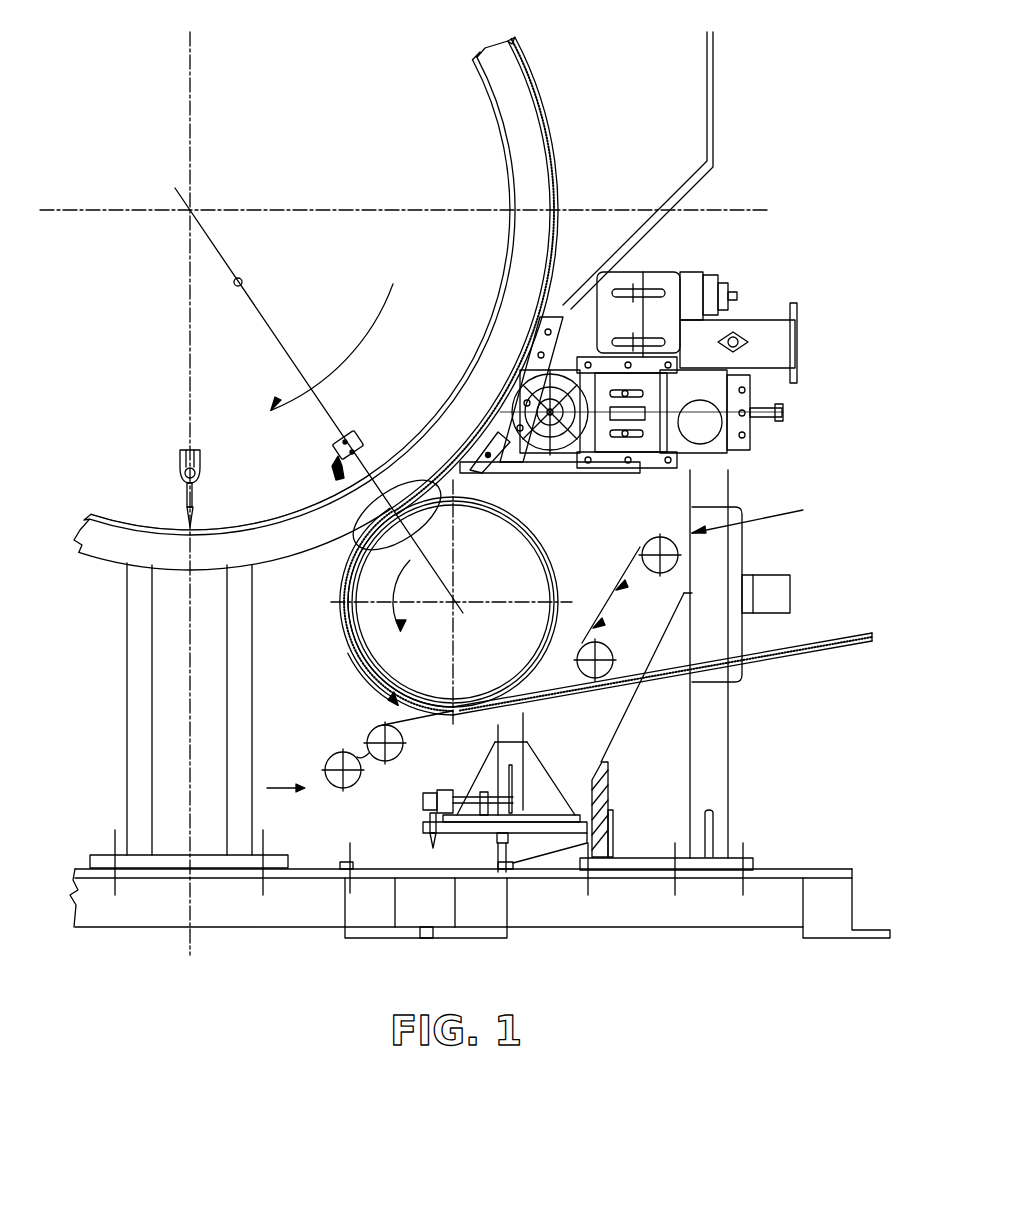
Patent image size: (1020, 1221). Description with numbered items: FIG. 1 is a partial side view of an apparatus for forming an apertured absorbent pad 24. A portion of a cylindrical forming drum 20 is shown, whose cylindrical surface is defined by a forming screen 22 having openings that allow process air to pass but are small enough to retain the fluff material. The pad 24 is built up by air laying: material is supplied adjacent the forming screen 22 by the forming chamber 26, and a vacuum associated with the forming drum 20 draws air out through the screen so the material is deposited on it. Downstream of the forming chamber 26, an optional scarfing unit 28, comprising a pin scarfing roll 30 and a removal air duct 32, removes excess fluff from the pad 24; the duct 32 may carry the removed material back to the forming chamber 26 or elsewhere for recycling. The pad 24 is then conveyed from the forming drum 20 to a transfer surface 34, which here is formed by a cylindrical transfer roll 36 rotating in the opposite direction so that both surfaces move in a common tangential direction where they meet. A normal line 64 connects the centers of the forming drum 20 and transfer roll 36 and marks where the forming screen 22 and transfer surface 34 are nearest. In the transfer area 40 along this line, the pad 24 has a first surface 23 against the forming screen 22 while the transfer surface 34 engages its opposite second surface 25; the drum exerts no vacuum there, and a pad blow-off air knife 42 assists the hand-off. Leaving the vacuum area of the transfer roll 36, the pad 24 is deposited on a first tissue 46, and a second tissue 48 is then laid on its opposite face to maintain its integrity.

The forming drum 20 is at (125, 520).
The forming screen 22 is at (318, 556).
The first surface 23 is at (345, 580).
The pad 24 is at (552, 120).
The second surface 25 is at (465, 478).
The forming chamber 26 is at (642, 180).
The scarfing unit 28 is at (755, 312).
The pin scarfing roll 30 is at (593, 442).
The removal air duct 32 is at (797, 332).
The transfer surface 34 is at (521, 519).
The transfer roll 36 is at (550, 548).
The transfer area 40 is at (405, 488).
The pad blow-off air knife 42 is at (337, 437).
The first tissue 46 is at (413, 720).
The second tissue 48 is at (630, 568).
The normal line 64 is at (243, 281).